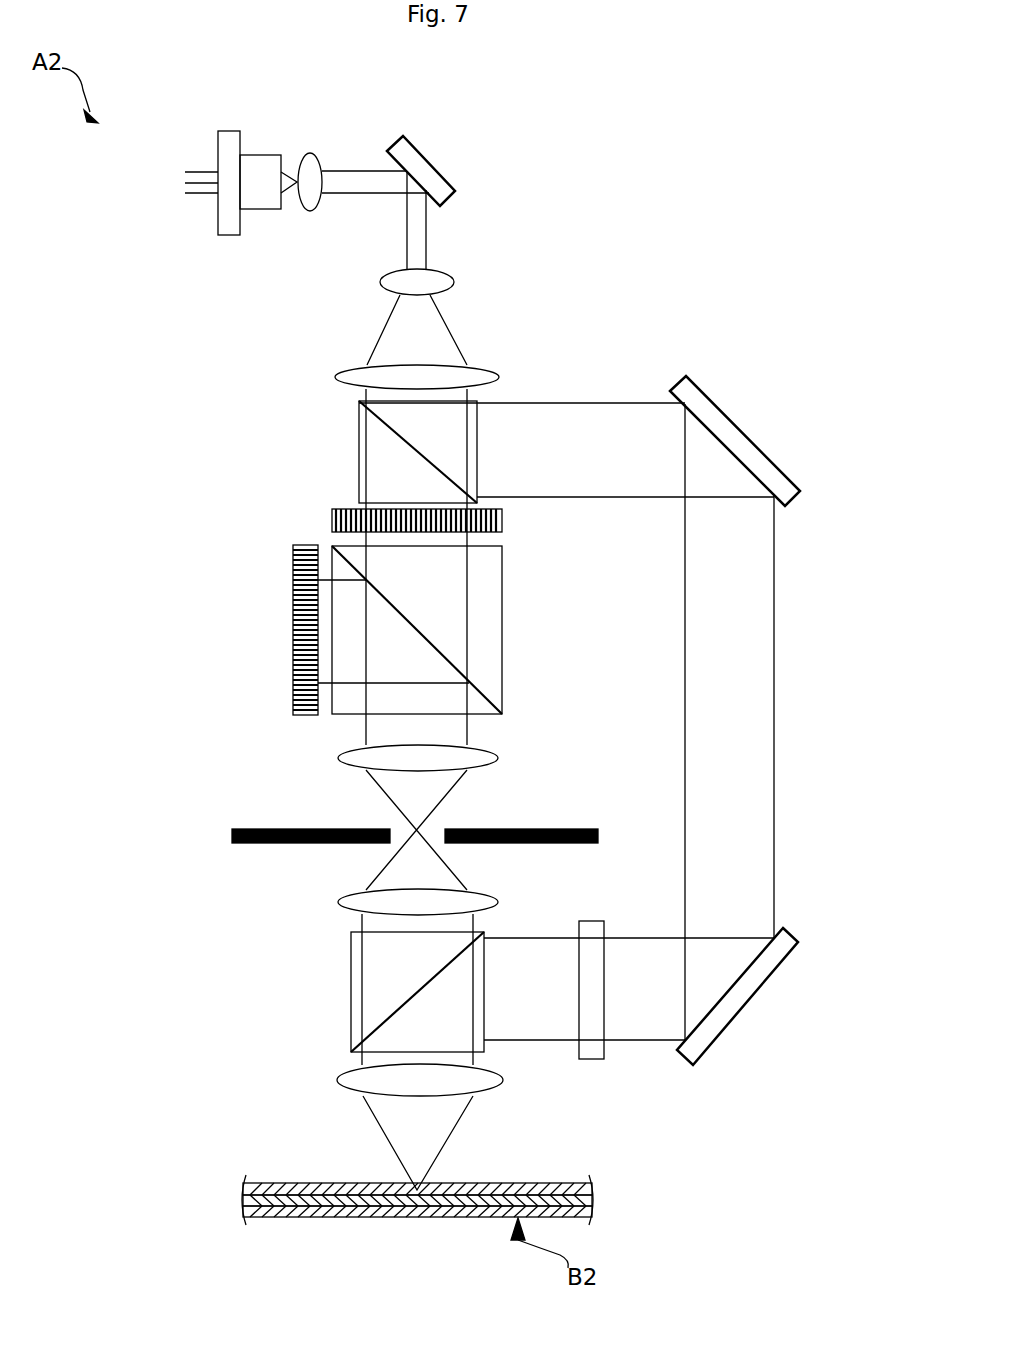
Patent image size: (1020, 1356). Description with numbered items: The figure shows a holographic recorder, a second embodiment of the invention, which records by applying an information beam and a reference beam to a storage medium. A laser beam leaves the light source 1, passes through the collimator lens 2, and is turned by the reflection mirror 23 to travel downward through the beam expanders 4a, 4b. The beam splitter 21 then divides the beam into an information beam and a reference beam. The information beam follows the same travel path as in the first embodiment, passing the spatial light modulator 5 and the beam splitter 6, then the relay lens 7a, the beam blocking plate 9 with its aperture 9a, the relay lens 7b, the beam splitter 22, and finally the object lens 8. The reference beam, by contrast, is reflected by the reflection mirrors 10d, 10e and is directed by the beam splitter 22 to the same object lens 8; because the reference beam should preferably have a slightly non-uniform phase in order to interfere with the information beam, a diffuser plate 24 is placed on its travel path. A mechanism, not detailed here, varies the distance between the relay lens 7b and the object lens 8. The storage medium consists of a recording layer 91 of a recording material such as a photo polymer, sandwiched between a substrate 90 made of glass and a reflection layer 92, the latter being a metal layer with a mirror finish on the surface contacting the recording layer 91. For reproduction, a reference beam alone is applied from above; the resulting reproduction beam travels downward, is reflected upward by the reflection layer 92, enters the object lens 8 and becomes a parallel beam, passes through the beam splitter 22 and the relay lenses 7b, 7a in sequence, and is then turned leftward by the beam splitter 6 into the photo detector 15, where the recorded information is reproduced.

The light source 1 is at (230, 131).
The collimator lens 2 is at (312, 153).
The reflection mirror 23 is at (410, 138).
The beam expander 4a is at (380, 282).
The beam expander 4b is at (338, 377).
The beam splitter 21 is at (359, 450).
The spatial light modulator 5 is at (503, 525).
The photo detector 15 is at (292, 552).
The beam splitter 6 is at (502, 620).
The reflection mirror 10d is at (686, 376).
The relay lens 7a is at (338, 758).
The beam blocking plate 9 is at (525, 829).
The aperture 9a is at (445, 829).
The relay lens 7b is at (338, 902).
The beam splitter 22 is at (351, 1000).
The object lens 8 is at (340, 1080).
The diffuser plate 24 is at (590, 1060).
The reflection mirror 10e is at (790, 935).
The substrate 90 is at (580, 1189).
The recording layer 91 is at (592, 1200).
The reflection layer 92 is at (594, 1213).